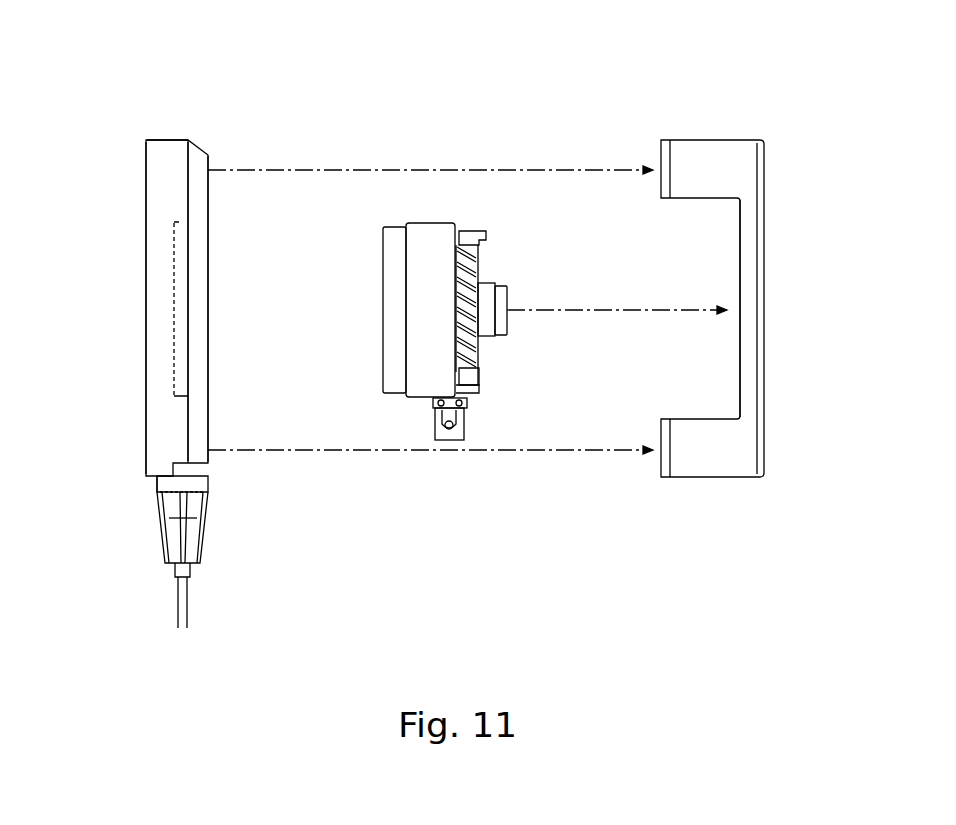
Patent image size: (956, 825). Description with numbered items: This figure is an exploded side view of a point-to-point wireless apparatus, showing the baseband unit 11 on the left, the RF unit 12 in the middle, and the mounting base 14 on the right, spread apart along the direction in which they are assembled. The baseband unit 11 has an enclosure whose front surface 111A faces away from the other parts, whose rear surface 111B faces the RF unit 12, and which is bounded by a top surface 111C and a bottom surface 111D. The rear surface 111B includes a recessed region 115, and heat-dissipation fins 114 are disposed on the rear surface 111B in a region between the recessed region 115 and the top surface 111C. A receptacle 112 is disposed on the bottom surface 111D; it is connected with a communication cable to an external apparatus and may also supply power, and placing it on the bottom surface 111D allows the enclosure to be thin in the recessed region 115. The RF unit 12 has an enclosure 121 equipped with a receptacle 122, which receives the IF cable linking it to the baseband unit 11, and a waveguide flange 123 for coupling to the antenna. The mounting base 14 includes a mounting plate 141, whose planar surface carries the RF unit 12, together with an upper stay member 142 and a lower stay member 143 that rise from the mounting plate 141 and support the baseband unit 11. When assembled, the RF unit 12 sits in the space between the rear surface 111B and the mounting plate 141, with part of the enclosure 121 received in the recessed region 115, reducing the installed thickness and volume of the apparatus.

The baseband unit 11 is at (127, 125).
The front surface 111A is at (146, 258).
The rear surface 111B is at (188, 197).
The top surface 111C is at (178, 138).
The bottom surface 111D is at (156, 478).
The receptacle 112 is at (205, 478).
The heat-dissipation fins 114 is at (210, 407).
The recessed region 115 is at (186, 286).
The RF unit 12 is at (449, 306).
The enclosure 121 is at (383, 262).
The receptacle 122 is at (445, 445).
The waveguide flange 123 is at (508, 297).
The mounting base 14 is at (733, 302).
The mounting plate 141 is at (740, 263).
The upper stay member 142 is at (740, 148).
The lower stay member 143 is at (712, 463).